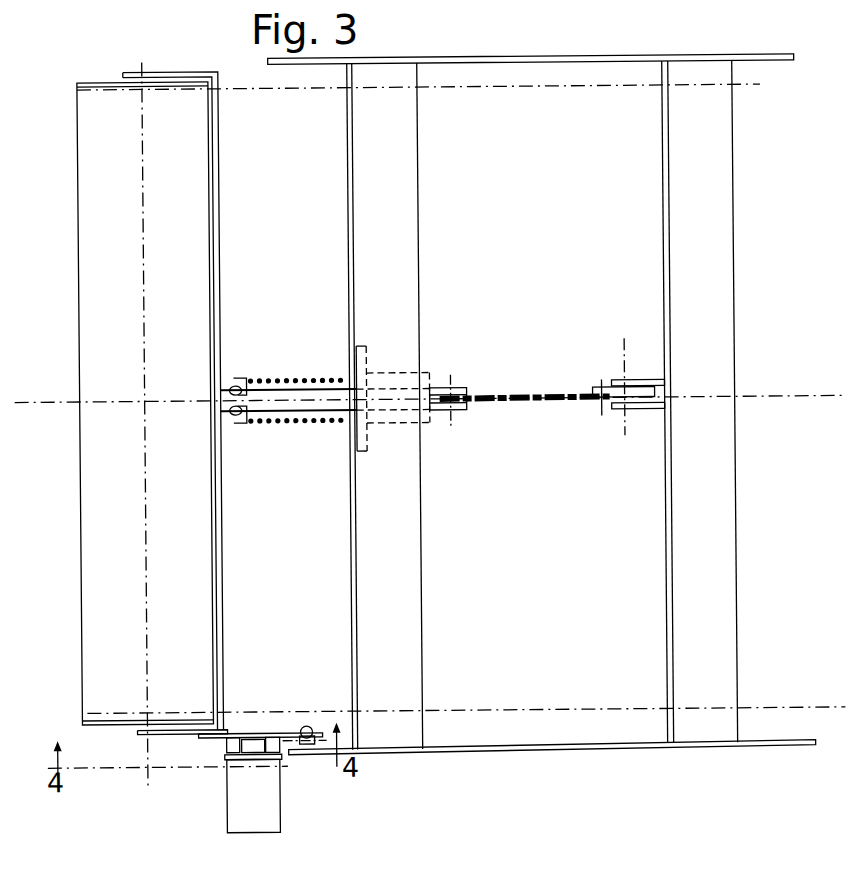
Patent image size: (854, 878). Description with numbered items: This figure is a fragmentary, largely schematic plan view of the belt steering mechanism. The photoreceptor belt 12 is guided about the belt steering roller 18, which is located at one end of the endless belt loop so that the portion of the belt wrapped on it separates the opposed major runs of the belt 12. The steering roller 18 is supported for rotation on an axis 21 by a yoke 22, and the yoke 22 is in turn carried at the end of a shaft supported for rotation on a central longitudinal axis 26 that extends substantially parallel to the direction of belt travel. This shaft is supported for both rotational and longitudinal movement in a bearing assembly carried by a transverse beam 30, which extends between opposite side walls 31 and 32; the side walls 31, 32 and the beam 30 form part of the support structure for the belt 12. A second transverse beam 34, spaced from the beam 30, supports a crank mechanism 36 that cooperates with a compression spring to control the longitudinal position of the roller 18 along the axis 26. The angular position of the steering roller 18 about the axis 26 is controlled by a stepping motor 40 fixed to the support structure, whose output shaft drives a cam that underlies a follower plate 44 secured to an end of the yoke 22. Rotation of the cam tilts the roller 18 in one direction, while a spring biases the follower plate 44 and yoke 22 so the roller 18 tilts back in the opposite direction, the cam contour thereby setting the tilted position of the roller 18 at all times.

The photoreceptor belt 12 is at (462, 88).
The belt steering roller 18 is at (104, 178).
The axis 21 is at (146, 556).
The yoke 22 is at (220, 196).
The central longitudinal axis 26 is at (52, 409).
The transverse beam 30 is at (407, 572).
The side wall 31 is at (521, 748).
The side wall 32 is at (518, 56).
The transverse beam 34 is at (681, 534).
The crank mechanism 36 is at (588, 417).
The stepping motor 40 is at (267, 804).
The follower plate 44 is at (266, 729).